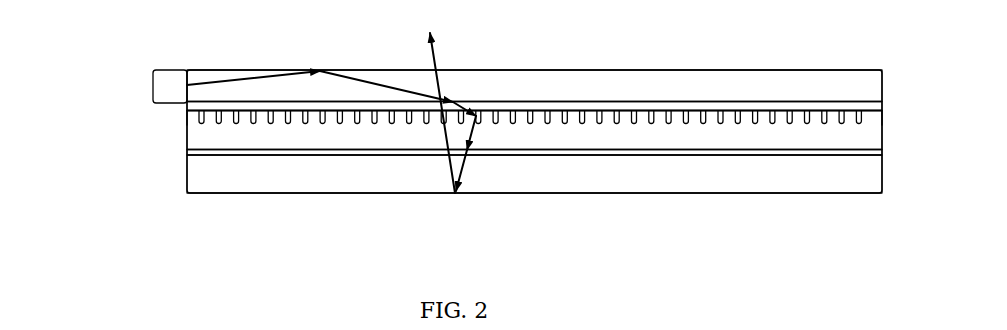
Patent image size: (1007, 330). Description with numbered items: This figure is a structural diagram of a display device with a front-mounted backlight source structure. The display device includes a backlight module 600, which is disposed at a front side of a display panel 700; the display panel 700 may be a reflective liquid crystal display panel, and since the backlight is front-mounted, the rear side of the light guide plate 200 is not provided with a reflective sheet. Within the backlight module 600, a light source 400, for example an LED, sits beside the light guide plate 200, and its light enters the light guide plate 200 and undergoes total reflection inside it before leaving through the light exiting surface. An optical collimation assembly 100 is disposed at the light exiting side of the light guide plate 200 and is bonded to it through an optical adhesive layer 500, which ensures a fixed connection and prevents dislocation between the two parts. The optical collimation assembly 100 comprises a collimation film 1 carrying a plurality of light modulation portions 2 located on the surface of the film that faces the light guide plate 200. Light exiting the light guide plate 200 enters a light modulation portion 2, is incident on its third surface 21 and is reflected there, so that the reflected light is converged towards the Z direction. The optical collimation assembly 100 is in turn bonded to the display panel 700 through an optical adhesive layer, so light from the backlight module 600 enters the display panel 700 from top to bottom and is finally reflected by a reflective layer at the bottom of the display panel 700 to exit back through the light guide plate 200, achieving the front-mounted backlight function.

The collimation film 1 is at (877, 138).
The light modulation portion 2 is at (870, 121).
The third surface 21 is at (873, 117).
The optical collimation assembly 100 is at (193, 135).
The light guide plate 200 is at (198, 79).
The light source 400 is at (177, 74).
The optical adhesive layer 500 is at (192, 108).
The backlight module 600 is at (112, 68).
The display panel 700 is at (195, 173).